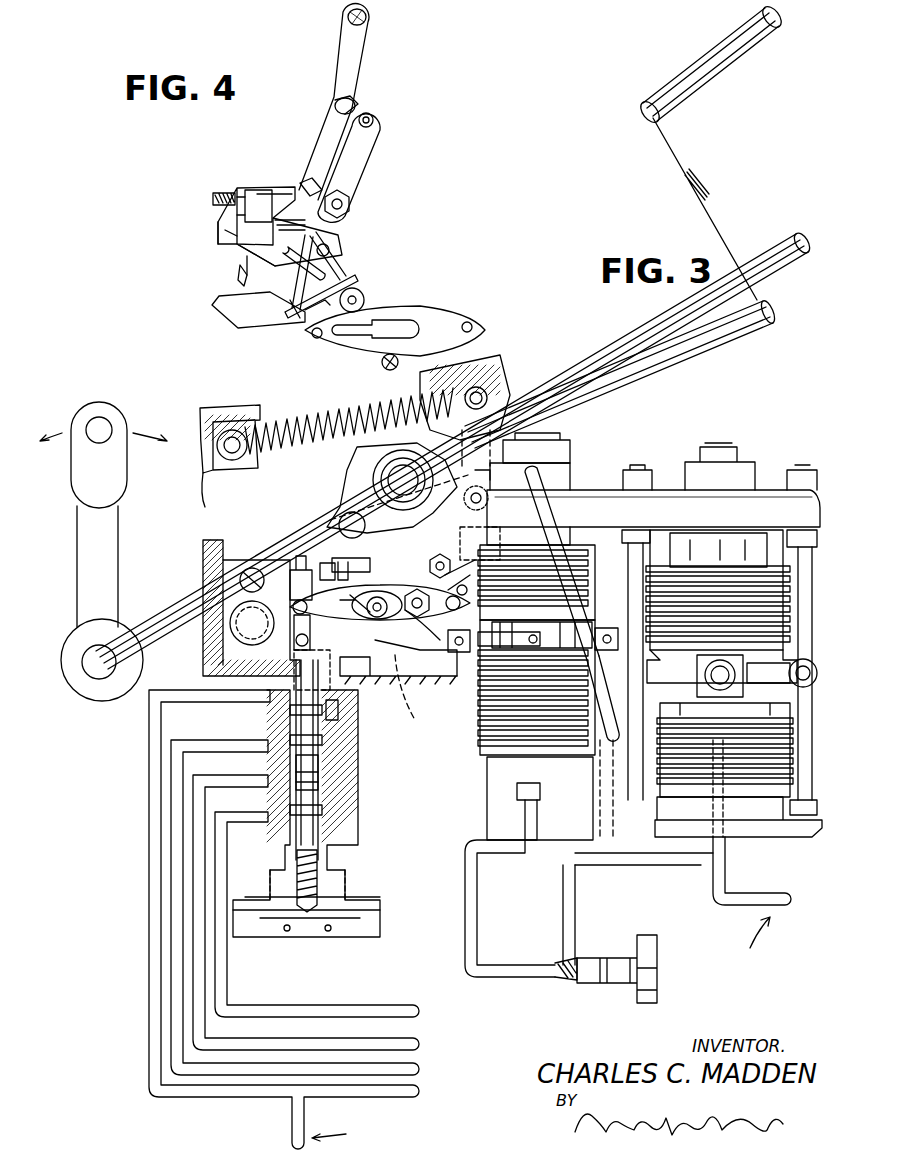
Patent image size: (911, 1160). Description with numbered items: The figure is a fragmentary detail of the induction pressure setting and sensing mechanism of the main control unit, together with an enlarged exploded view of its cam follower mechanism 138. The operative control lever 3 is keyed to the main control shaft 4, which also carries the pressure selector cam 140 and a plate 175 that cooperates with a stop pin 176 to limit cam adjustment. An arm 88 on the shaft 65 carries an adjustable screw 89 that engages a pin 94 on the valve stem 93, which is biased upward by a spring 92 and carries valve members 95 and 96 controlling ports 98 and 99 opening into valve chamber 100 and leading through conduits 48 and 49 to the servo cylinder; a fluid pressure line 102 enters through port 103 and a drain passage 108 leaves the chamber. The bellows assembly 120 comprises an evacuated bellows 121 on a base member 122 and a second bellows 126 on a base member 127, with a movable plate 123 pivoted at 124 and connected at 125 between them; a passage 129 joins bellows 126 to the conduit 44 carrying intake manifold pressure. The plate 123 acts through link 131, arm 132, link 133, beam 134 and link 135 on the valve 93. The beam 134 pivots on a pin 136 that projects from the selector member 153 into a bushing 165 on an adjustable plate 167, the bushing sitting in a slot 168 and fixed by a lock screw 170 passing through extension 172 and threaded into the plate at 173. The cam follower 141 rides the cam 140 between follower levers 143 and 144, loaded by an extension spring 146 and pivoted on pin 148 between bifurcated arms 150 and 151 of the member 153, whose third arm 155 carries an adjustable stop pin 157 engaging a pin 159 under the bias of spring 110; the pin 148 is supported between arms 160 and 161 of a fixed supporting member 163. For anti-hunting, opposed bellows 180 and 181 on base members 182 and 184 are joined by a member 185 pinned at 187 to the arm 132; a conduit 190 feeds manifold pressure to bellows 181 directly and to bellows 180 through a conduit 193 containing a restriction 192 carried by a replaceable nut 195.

In FIG. 3, the operative control lever 3 is at (119, 552).
In FIG. 3, the main control shaft 4 is at (762, 247).
In FIG. 3, the conduit 44 is at (748, 902).
In FIG. 3, the conduit 48 is at (400, 1068).
In FIG. 3, the conduit 49 is at (228, 868).
In FIG. 3, the shaft 65 is at (680, 62).
In FIG. 3, the arm 88 is at (300, 562).
In FIG. 3, the adjustable screw 89 is at (295, 556).
In FIG. 3, the spring 92 is at (318, 876).
In FIG. 3, the valve stem 93 is at (296, 688).
In FIG. 3, the pin 94 is at (312, 646).
In FIG. 3, the valve member 95 is at (336, 716).
In FIG. 3, the valve member 96 is at (330, 774).
In FIG. 3, the port 98 is at (290, 710).
In FIG. 3, the port 99 is at (290, 804).
In FIG. 3, the valve chamber 100 is at (320, 756).
In FIG. 3, the fluid pressure line 102 is at (200, 777).
In FIG. 3, the port 103 is at (290, 742).
In FIG. 3, the drain passage 108 is at (149, 885).
In FIG. 4, the spring 110 is at (330, 224).
In FIG. 3, the bellows assembly 120 is at (773, 471).
In FIG. 3, the evacuated bellows 121 is at (718, 590).
In FIG. 3, the base member 122 is at (669, 490).
In FIG. 3, the movable plate 123 is at (682, 664).
In FIG. 3, the pivot 124 is at (789, 670).
In FIG. 3, the pivotal connection 125 is at (706, 680).
In FIG. 3, the second bellows 126 is at (725, 750).
In FIG. 3, the second base member 127 is at (780, 830).
In FIG. 3, the passage 129 is at (696, 849).
In FIG. 3, the link 131 is at (612, 623).
In FIG. 3, the arm 132 is at (464, 645).
In FIG. 3, the link 133 is at (462, 575).
In FIG. 4, the beam 134 is at (420, 304).
In FIG. 3, the beam 134 is at (340, 582).
In FIG. 3, the link 135 is at (356, 620).
In FIG. 4, the pin 136 is at (290, 273).
In FIG. 4, the cam follower mechanism 138 is at (283, 167).
In FIG. 3, the cam follower mechanism 138 is at (319, 550).
In FIG. 3, the pressure selector cam 140 is at (522, 491).
In FIG. 4, the cam follower 141 is at (353, 103).
In FIG. 3, the cam follower 141 is at (494, 486).
In FIG. 4, the follower lever 143 is at (370, 168).
In FIG. 3, the follower lever 143 is at (462, 542).
In FIG. 4, the follower lever 144 is at (343, 42).
In FIG. 3, the follower lever 144 is at (536, 448).
In FIG. 3, the extension spring 146 is at (303, 402).
In FIG. 4, the pin 148 is at (338, 262).
In FIG. 3, the pin 148 is at (413, 616).
In FIG. 4, the bifurcated arm 150 is at (330, 250).
In FIG. 4, the bifurcated arm 151 is at (243, 192).
In FIG. 4, the selector member 153 is at (252, 240).
In FIG. 4, the third arm 155 is at (232, 214).
In FIG. 4, the adjustable stop pin 157 is at (272, 190).
In FIG. 3, the adjustable stop pin 157 is at (360, 558).
In FIG. 4, the pin 159 is at (308, 183).
In FIG. 3, the pin 159 is at (463, 562).
In FIG. 4, the bifurcated arm 160 is at (345, 268).
In FIG. 3, the bifurcated arm 160 is at (410, 700).
In FIG. 4, the bifurcated arm 161 is at (240, 268).
In FIG. 4, the supporting member 163 is at (222, 300).
In FIG. 3, the supporting member 163 is at (384, 688).
In FIG. 4, the bushing 165 is at (365, 298).
In FIG. 4, the adjustable plate 167 is at (325, 302).
In FIG. 4, the slot 168 is at (415, 318).
In FIG. 3, the lock screw 170 is at (403, 386).
In FIG. 4, the extension 172 is at (350, 342).
In FIG. 4, the threaded engagement 173 is at (298, 306).
In FIG. 3, the plate 175 is at (352, 457).
In FIG. 3, the stop pin 176 is at (332, 520).
In FIG. 3, the bellows 180 is at (536, 687).
In FIG. 3, the bellows 181 is at (536, 582).
In FIG. 3, the base member 182 is at (487, 786).
In FIG. 3, the base member 184 is at (560, 500).
In FIG. 3, the member 185 is at (560, 622).
In FIG. 3, the pin 187 is at (529, 638).
In FIG. 3, the conduit 190 is at (566, 534).
In FIG. 3, the restriction 192 is at (566, 980).
In FIG. 3, the conduit 193 is at (462, 877).
In FIG. 3, the nut 195 is at (640, 995).